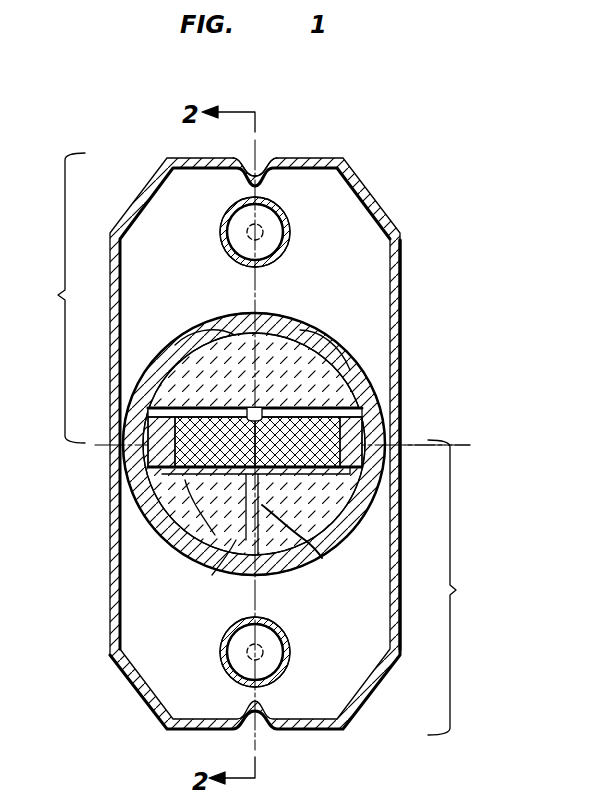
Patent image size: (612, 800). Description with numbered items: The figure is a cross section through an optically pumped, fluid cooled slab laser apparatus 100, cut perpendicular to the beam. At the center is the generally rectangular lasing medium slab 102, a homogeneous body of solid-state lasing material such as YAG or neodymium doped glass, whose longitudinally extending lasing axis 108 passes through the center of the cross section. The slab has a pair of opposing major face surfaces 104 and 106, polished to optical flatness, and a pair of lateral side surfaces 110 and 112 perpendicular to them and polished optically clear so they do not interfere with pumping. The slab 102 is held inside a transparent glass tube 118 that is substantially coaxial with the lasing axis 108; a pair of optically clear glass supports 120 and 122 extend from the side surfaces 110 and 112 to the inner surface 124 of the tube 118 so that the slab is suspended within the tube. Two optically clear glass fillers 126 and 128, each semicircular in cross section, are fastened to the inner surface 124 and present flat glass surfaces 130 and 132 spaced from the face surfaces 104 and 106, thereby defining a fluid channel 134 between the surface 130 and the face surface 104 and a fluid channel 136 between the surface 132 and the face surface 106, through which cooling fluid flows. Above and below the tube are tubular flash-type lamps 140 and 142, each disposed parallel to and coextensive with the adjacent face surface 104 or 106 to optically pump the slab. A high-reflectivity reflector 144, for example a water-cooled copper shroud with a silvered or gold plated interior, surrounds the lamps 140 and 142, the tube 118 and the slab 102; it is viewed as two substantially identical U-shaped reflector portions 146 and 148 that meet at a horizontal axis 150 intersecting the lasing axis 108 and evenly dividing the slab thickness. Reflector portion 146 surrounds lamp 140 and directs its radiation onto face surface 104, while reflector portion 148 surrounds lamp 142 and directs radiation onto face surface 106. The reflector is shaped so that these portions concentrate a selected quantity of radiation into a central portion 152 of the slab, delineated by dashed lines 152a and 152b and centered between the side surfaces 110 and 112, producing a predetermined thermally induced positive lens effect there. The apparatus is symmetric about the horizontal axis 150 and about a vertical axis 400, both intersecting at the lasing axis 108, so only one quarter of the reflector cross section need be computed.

The slab laser apparatus 100 is at (137, 192).
The vertical axis 400 is at (272, 160).
The reflector 144 is at (401, 234).
The tubular lamp 140 is at (268, 231).
The tubular lamp 142 is at (272, 655).
The central portion 152 is at (310, 548).
The dashed line 152a is at (222, 437).
The dashed line 152b is at (296, 407).
The glass support 120 is at (363, 417).
The lasing axis 108 is at (360, 423).
The lasing medium slab 102 is at (241, 407).
The major face surface 104 is at (266, 405).
The lateral side surface 112 is at (120, 426).
The lateral side surface 110 is at (380, 457).
The glass support 122 is at (147, 452).
The major face surface 106 is at (168, 475).
The flat glass surface 130 is at (270, 405).
The glass filler 126 is at (207, 352).
The fluid channel 134 is at (352, 395).
The flat glass surface 132 is at (202, 474).
The glass filler 128 is at (236, 540).
The tube 118 is at (250, 540).
The inner surface 124 is at (258, 555).
The fluid channel 136 is at (367, 470).
The reflector portion 146 is at (49, 298).
The reflector portion 148 is at (468, 587).
The horizontal axis 150 is at (413, 440).